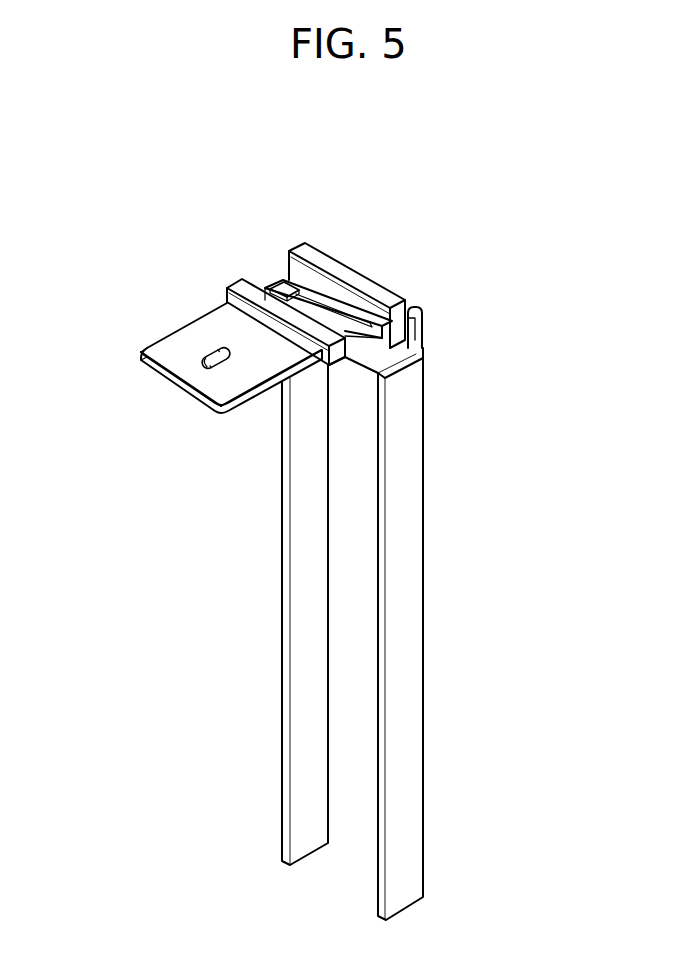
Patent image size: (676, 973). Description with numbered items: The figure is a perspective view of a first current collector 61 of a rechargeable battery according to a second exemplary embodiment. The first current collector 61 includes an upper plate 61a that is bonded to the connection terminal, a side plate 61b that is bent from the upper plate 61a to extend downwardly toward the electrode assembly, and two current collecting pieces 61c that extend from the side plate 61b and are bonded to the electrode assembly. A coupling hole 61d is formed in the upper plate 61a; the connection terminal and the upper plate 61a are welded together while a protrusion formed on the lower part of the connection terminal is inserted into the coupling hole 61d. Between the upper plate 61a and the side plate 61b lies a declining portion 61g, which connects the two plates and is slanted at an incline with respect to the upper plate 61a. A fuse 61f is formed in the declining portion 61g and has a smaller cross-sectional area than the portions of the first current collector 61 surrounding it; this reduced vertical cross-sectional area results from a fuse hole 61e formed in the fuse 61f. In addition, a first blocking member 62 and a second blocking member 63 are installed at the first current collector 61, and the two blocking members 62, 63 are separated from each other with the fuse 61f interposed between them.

The first current collector 61 is at (396, 283).
The upper plate 61a is at (193, 342).
The side plate 61b is at (423, 333).
The current collecting pieces 61c is at (402, 647).
The coupling hole 61d is at (203, 351).
The fuse hole 61e is at (325, 310).
The fuse 61f is at (285, 289).
The declining portion 61g is at (375, 346).
The first blocking member 62 is at (242, 288).
The second blocking member 63 is at (304, 250).